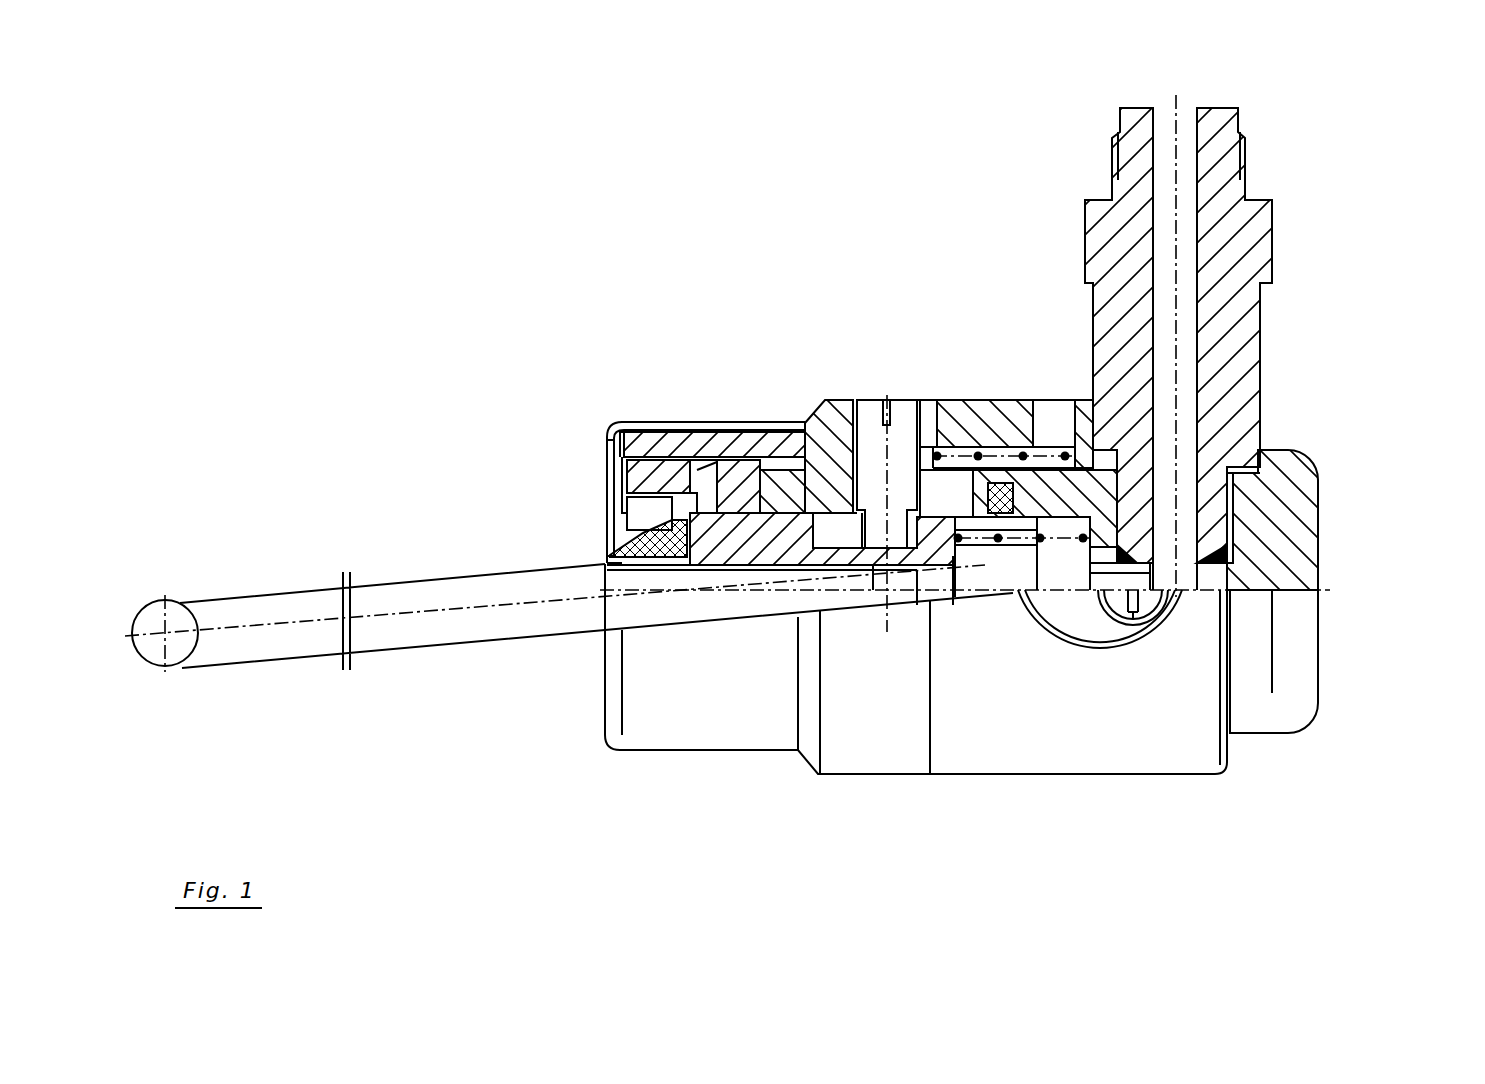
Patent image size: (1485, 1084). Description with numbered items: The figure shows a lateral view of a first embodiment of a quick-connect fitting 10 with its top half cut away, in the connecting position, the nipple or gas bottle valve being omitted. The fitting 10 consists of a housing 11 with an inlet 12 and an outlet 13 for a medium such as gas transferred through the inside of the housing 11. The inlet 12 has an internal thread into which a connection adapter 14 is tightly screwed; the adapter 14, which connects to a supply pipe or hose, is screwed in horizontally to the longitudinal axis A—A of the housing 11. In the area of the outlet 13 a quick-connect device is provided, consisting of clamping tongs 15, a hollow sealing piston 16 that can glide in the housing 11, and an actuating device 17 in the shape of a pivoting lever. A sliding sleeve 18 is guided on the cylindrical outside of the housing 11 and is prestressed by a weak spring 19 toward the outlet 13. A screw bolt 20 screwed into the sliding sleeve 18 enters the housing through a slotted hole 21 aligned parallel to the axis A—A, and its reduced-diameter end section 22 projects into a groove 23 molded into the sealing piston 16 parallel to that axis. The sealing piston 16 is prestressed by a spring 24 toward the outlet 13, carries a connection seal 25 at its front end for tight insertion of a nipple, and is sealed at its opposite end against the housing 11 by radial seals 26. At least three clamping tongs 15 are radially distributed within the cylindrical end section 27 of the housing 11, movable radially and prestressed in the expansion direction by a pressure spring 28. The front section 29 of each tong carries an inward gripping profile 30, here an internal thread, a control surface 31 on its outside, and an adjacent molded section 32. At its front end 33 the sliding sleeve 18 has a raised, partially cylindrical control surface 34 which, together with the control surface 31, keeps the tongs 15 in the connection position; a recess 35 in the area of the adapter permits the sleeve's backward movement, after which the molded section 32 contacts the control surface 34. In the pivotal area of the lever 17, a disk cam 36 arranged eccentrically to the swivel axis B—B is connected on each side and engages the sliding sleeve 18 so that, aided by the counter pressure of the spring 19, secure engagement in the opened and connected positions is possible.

The quick-connect fitting 10 is at (400, 134).
The housing 11 is at (1320, 515).
The inlet 12 is at (1248, 500).
The outlet 13 is at (489, 461).
The connection adapter 14 is at (1240, 272).
The clamping tongs 15 is at (695, 465).
The hollow sealing piston 16 is at (720, 548).
The actuating device 17 is at (432, 620).
The sliding sleeve 18 is at (957, 423).
The weak spring 19 is at (1075, 448).
The screw bolt 20 is at (868, 398).
The slotted hole 21 is at (897, 412).
The end section 22 is at (897, 530).
The groove 23 is at (840, 530).
The spring 24 is at (997, 538).
The connection seal 25 is at (620, 540).
The radial seals 26 is at (987, 447).
The cylindrical end section 27 is at (760, 483).
The pressure spring 28 is at (805, 424).
The front section 29 is at (618, 470).
The gripping profile 30 is at (605, 475).
The control surface 31 is at (632, 437).
The molded section 32 is at (660, 443).
The front end 33 is at (640, 458).
The control surface 34 is at (638, 462).
The recess 35 is at (1010, 480).
The disk cam 36 is at (1097, 620).
The longitudinal axis A is at (1320, 592).
The swivel axis B is at (1133, 605).